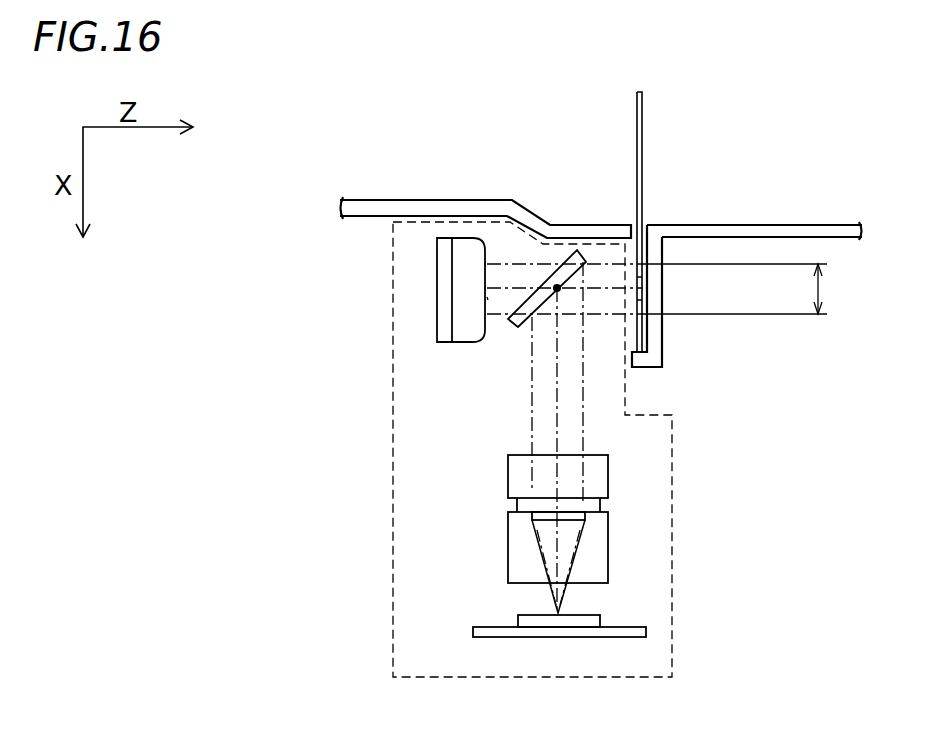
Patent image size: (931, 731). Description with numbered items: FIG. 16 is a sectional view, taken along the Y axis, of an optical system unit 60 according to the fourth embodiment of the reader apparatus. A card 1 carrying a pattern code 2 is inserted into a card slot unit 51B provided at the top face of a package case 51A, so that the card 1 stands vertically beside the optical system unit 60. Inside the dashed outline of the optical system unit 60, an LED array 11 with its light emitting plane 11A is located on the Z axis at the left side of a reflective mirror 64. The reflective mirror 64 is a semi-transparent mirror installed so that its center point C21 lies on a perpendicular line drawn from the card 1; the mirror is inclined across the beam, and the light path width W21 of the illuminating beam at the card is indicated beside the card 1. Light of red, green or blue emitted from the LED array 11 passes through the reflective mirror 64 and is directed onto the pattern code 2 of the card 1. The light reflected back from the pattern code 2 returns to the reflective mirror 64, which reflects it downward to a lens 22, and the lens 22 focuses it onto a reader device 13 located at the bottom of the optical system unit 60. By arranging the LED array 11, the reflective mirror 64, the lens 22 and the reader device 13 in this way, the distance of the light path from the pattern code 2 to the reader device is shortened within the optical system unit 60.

The card 1 is at (636, 112).
The pattern code 2 is at (643, 289).
The LED array 11 is at (437, 292).
The light emitting plane 11A is at (487, 297).
The reader device 13 is at (473, 633).
The lens 22 is at (508, 477).
The package case 51A is at (765, 221).
The card slot unit 51B is at (645, 224).
The optical system unit 60 is at (673, 577).
The reflective mirror 64 is at (584, 258).
The center point C21 is at (557, 288).
The light path width W21 is at (847, 289).